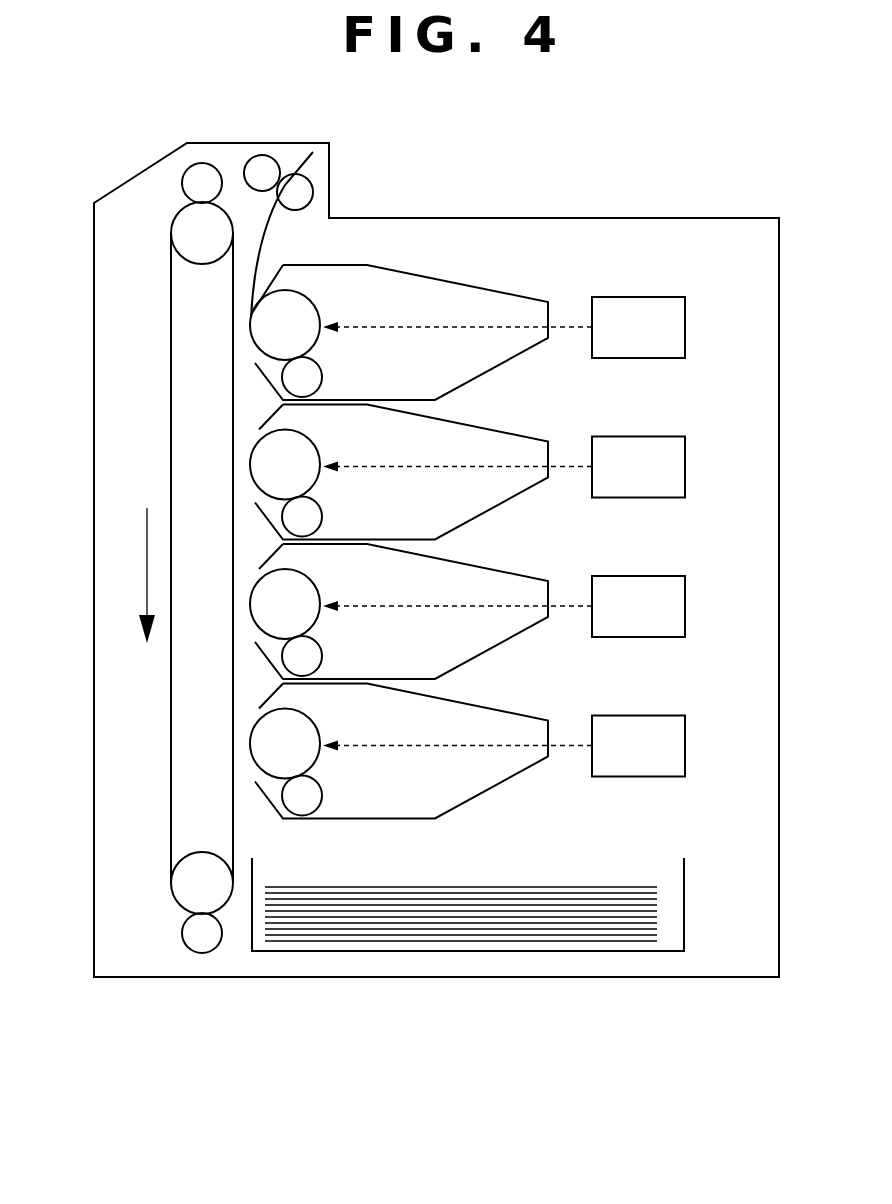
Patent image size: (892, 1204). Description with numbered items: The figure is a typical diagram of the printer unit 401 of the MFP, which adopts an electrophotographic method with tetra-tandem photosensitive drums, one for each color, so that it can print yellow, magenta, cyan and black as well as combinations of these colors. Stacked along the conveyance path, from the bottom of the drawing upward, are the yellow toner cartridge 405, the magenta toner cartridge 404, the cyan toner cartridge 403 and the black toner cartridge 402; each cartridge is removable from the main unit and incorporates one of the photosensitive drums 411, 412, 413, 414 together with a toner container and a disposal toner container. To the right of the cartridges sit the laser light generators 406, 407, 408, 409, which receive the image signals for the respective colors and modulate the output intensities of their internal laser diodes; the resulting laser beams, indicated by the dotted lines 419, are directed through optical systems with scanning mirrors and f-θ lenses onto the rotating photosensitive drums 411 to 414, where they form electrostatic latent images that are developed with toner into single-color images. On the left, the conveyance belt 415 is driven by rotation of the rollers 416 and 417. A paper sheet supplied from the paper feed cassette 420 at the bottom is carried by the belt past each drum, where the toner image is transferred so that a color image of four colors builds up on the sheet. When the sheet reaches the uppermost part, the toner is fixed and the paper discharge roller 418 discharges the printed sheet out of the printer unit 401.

The printer unit 401 is at (644, 984).
The black toner cartridge 402 is at (508, 363).
The cyan toner cartridge 403 is at (508, 502).
The magenta toner cartridge 404 is at (508, 642).
The yellow toner cartridge 405 is at (488, 788).
The laser light generator 406 is at (665, 358).
The laser light generator 407 is at (665, 498).
The laser light generator 408 is at (665, 637).
The laser light generator 409 is at (665, 776).
The photosensitive drum 411 is at (295, 320).
The photosensitive drum 412 is at (295, 460).
The photosensitive drum 413 is at (295, 599).
The photosensitive drum 414 is at (295, 738).
The conveyance belt 415 is at (171, 443).
The roller 416 is at (200, 883).
The roller 417 is at (193, 238).
The paper discharge roller 418 is at (263, 163).
The dotted lines 419 is at (483, 325).
The paper feed cassette 420 is at (392, 978).